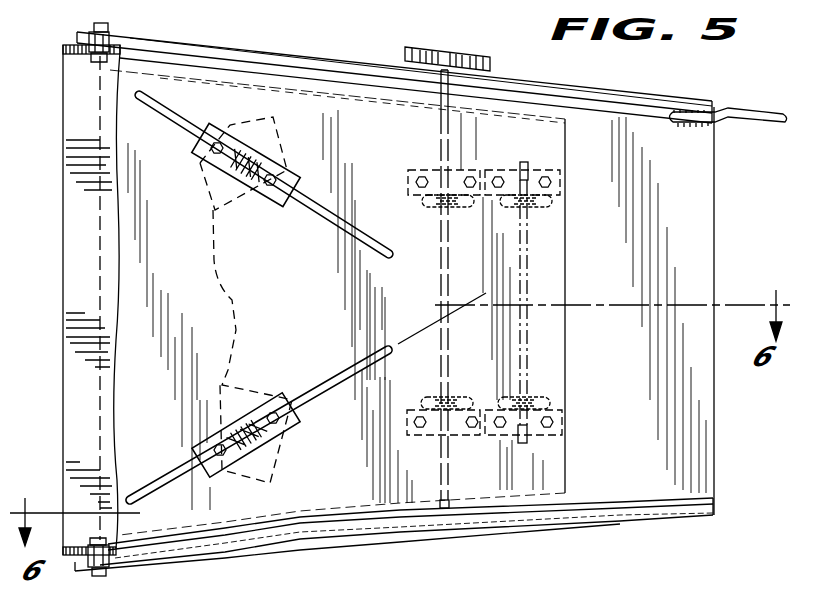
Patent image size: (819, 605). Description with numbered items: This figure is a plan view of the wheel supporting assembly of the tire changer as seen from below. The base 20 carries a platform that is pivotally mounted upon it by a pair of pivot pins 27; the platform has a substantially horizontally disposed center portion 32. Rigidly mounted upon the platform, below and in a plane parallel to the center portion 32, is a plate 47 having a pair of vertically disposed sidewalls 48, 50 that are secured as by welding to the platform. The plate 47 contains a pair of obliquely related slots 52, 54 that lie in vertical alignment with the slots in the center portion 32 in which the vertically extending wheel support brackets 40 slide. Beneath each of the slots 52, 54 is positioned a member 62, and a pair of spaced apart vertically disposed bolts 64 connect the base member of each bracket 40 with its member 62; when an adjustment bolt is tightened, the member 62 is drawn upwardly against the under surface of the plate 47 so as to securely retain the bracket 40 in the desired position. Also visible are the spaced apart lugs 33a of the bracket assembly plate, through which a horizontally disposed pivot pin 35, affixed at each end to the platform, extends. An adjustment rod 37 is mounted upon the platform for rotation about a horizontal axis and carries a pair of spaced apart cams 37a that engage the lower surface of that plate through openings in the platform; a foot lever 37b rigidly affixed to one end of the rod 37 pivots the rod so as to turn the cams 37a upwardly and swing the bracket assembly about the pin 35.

The base 20 is at (72, 308).
The pivot pins 27 is at (99, 26).
The center portion 32 is at (690, 235).
The lugs 33a is at (545, 211).
The pivot pin 35 is at (548, 296).
The adjustment rod 37 is at (452, 96).
The cams 37a is at (458, 210).
The foot lever 37b is at (493, 64).
The wheel support bracket 40 is at (246, 300).
The plate 47 is at (566, 368).
The sidewall 48 is at (290, 100).
The sidewall 50 is at (318, 520).
The slot 52 is at (322, 218).
The slot 54 is at (330, 377).
The members 62 is at (229, 164).
The bolts 64 is at (282, 172).